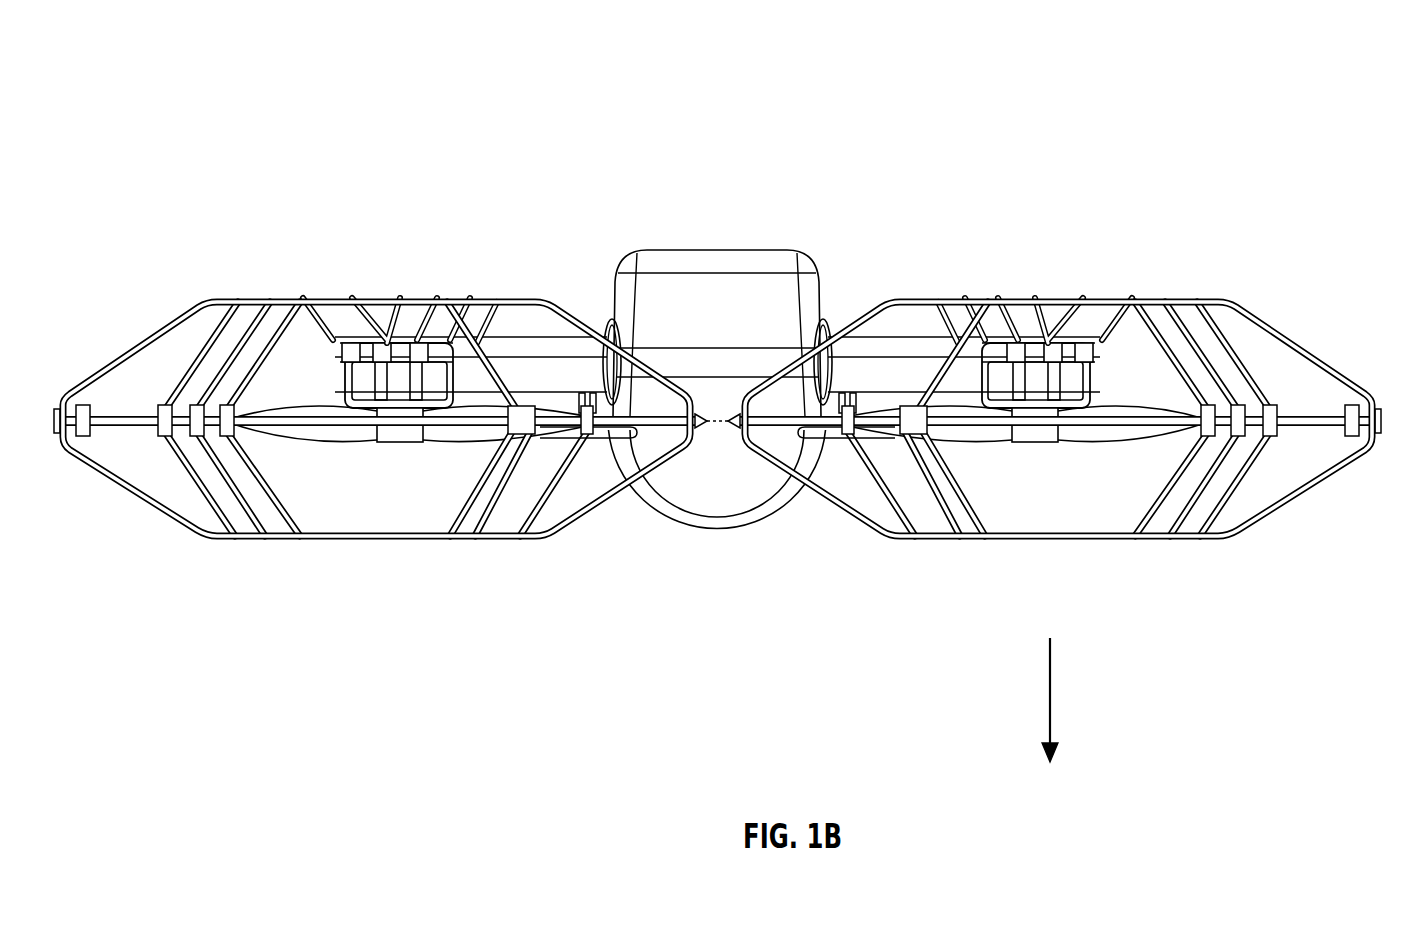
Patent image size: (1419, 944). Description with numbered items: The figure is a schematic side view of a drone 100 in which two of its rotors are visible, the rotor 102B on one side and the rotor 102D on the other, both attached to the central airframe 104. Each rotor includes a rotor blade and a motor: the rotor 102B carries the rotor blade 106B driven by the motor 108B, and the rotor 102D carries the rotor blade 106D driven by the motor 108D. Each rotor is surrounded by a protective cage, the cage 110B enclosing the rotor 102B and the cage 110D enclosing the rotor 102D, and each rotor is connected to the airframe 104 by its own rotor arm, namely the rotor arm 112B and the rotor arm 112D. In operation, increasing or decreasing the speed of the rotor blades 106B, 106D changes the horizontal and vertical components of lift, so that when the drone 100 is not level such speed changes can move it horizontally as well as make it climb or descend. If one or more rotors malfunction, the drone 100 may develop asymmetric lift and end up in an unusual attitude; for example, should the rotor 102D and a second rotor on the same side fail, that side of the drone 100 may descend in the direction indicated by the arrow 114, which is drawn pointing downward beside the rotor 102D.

The drone 100 is at (725, 319).
The rotor 102B is at (374, 417).
The rotor 102D is at (1068, 421).
The airframe 104 is at (660, 248).
The rotor blade 106B is at (312, 433).
The rotor blade 106D is at (1123, 433).
The motor 108B is at (345, 373).
The motor 108D is at (1100, 372).
The cage 110B is at (162, 333).
The cage 110D is at (1283, 330).
The rotor arm 112B is at (541, 342).
The rotor arm 112D is at (905, 345).
The arrow 114 is at (1048, 690).